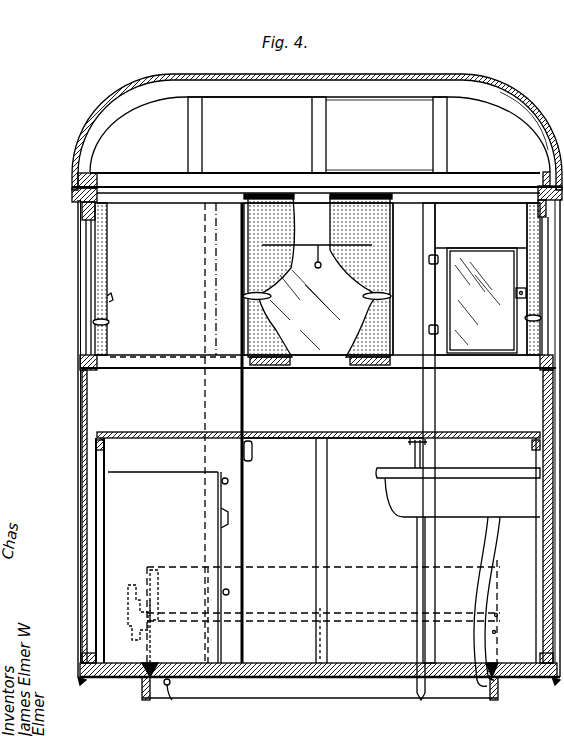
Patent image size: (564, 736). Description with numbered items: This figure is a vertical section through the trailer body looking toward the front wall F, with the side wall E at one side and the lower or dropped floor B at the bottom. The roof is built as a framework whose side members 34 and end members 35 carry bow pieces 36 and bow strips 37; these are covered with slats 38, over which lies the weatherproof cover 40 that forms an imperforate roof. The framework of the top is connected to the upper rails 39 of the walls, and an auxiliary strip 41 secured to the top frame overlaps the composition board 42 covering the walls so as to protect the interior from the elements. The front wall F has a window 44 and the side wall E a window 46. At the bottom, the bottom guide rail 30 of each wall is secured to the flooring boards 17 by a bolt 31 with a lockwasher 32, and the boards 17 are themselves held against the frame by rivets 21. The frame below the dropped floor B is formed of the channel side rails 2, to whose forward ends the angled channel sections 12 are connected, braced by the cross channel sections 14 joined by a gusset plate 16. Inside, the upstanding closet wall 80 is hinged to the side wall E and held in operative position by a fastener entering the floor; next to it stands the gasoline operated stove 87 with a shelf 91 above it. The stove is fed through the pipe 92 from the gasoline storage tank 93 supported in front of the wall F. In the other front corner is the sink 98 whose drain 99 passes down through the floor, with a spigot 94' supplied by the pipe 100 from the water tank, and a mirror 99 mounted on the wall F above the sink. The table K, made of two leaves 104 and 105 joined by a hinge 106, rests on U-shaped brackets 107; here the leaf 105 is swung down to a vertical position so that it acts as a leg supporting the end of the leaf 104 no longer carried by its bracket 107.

The cover 40 is at (197, 76).
The slats 38 is at (530, 118).
The bow strips 37 is at (310, 134).
The bow pieces 36 is at (392, 92).
The end members 35 is at (375, 180).
The side members 34 is at (97, 175).
The lockwasher 32 is at (543, 175).
The upper rails 39 is at (84, 206).
The bottom guide rail 30 is at (308, 451).
The window 46 is at (84, 299).
The side wall E is at (74, 262).
The auxiliary strip 41 is at (80, 376).
The shelf 91 is at (113, 300).
The front wall F is at (240, 320).
The upstanding wall 80 is at (243, 397).
The window 44 is at (318, 279).
The drain 99 is at (468, 250).
The table leaf 105 is at (368, 432).
The table leaf 104 is at (296, 423).
The table K is at (179, 429).
The brackets 107 is at (106, 448).
The hinge 106 is at (271, 452).
The gasoline operated stove 87 is at (118, 473).
The sink 98 is at (400, 500).
The spigot 94' is at (381, 455).
The pipe 100 is at (416, 582).
The bracing cross channel sections 14 is at (258, 612).
The gusset plate 16 is at (152, 617).
The gasoline storage tank 93 is at (303, 610).
The composition board 42 is at (82, 622).
The channel sections 12 is at (500, 624).
The bolt 31 is at (97, 657).
The rivet 21 is at (152, 670).
The flooring boards 17 is at (362, 678).
The side rails 2 is at (140, 695).
The pipe 92 is at (168, 686).
The floor B is at (303, 663).